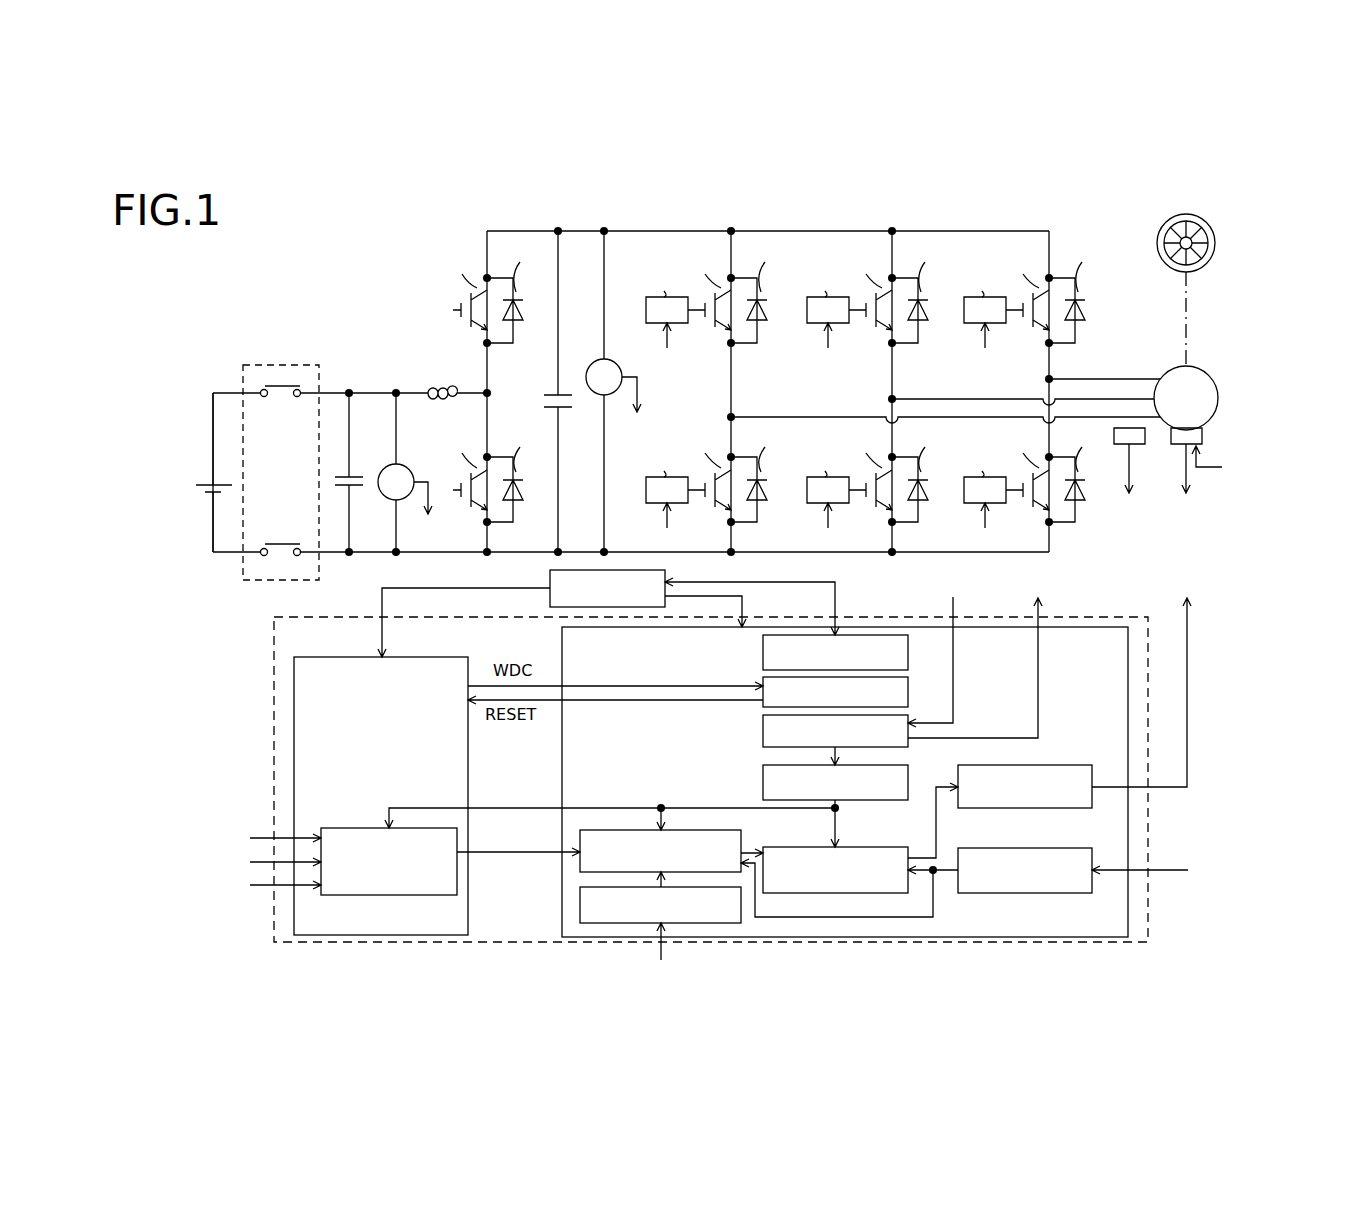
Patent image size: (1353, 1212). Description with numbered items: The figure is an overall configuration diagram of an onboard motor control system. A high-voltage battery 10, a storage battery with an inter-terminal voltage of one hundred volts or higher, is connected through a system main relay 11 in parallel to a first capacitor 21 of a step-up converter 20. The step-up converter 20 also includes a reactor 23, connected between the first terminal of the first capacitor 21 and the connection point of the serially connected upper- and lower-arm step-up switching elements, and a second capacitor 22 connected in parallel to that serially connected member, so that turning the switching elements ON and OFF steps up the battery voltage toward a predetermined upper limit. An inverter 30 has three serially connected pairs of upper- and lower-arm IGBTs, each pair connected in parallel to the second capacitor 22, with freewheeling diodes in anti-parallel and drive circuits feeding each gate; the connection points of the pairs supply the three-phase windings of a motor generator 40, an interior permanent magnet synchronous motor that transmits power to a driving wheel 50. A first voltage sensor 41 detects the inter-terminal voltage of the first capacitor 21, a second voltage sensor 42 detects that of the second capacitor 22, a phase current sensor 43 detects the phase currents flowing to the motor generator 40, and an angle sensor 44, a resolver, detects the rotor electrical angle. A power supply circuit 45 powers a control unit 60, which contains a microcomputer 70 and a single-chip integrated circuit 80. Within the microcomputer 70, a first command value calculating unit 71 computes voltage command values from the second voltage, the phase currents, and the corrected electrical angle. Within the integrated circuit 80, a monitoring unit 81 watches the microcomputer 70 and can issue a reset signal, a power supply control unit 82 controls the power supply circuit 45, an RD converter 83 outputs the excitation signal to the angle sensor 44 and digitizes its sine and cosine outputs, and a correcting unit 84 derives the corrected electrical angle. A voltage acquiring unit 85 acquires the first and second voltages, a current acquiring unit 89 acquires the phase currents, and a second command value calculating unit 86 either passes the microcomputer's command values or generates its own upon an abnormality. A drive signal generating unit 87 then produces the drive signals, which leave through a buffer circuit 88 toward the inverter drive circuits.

The high-voltage battery 10 is at (213, 485).
The system main relay 11 is at (291, 366).
The step-up converter 20 is at (536, 218).
The first capacitor 21 is at (340, 477).
The second capacitor 22 is at (572, 409).
The reactor 23 is at (434, 386).
The inverter 30 is at (1048, 218).
The motor generator 40 is at (1204, 377).
The first voltage sensor 41 is at (388, 467).
The second voltage sensor 42 is at (592, 361).
The phase current sensor 43 is at (1145, 442).
The angle sensor 44 is at (1204, 438).
The power supply circuit 45 is at (550, 579).
The driving wheel 50 is at (1199, 224).
The control unit 60 is at (1150, 937).
The microcomputer 70 is at (402, 657).
The first command value calculating unit 71 is at (352, 828).
The integrated circuit 80 is at (562, 650).
The monitoring unit 81 is at (908, 695).
The power supply control unit 82 is at (763, 654).
The RD converter 83 is at (763, 734).
The correcting unit 84 is at (763, 784).
The voltage acquiring unit 85 is at (1012, 848).
The second command value calculating unit 86 is at (741, 839).
The drive signal generating unit 87 is at (857, 847).
The buffer circuit 88 is at (1062, 765).
The current acquiring unit 89 is at (580, 908).